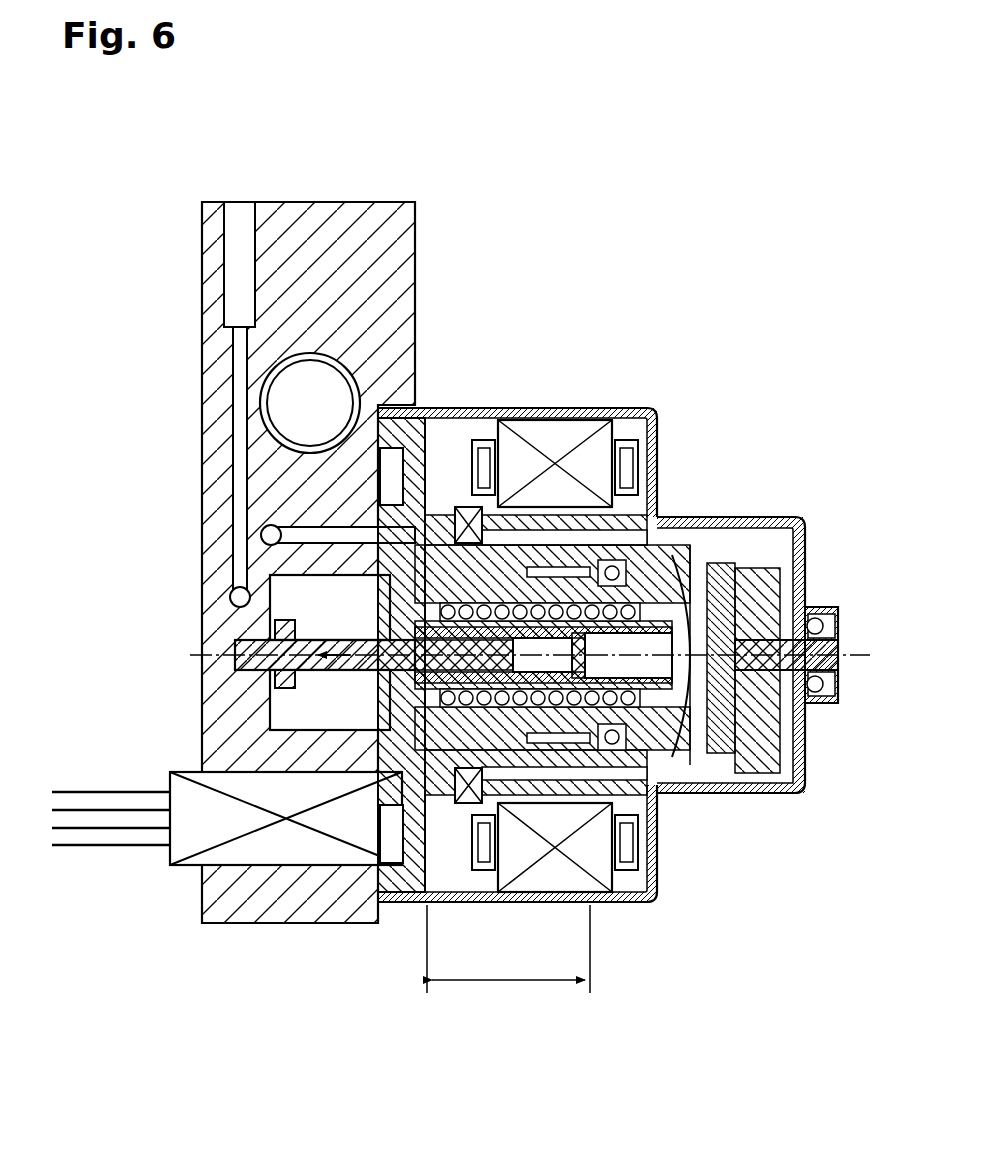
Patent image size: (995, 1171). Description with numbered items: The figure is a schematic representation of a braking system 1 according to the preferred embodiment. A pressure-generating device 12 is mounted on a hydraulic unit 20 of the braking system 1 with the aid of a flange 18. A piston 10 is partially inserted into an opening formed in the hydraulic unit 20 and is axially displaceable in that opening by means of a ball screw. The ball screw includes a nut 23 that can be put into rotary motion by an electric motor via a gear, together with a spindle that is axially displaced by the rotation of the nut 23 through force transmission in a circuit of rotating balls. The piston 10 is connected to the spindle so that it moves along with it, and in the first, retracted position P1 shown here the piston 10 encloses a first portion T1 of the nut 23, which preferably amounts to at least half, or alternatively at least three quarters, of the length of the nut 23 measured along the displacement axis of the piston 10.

The braking system 1 is at (571, 568).
The piston 10 is at (430, 700).
The pressure-generating device 12 is at (739, 514).
The flange 18 is at (405, 880).
The hydraulic unit 20 is at (333, 232).
The nut 23 is at (672, 600).
The first, retracted position P1 is at (390, 716).
The first portion T1 is at (508, 949).